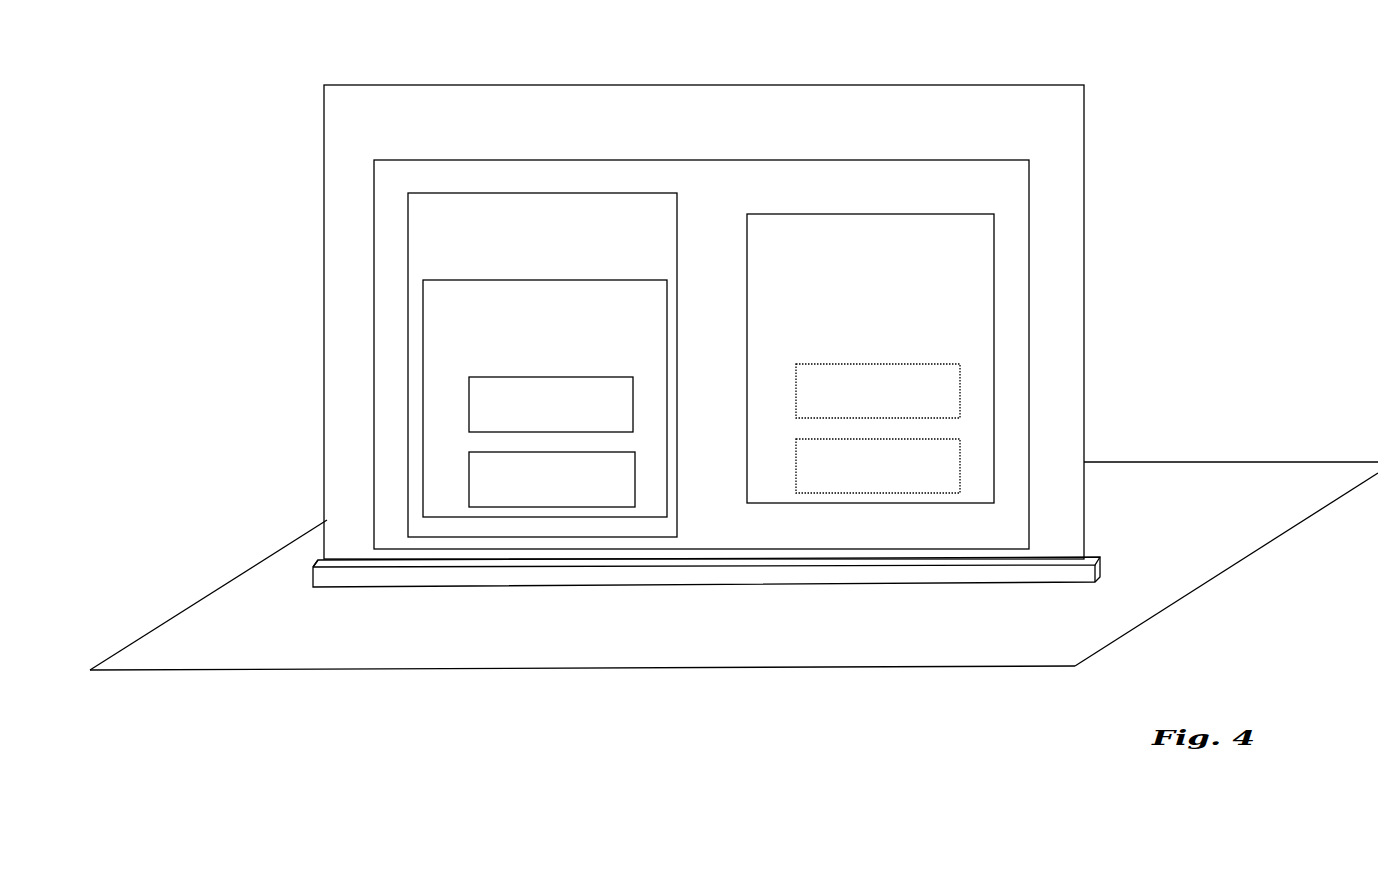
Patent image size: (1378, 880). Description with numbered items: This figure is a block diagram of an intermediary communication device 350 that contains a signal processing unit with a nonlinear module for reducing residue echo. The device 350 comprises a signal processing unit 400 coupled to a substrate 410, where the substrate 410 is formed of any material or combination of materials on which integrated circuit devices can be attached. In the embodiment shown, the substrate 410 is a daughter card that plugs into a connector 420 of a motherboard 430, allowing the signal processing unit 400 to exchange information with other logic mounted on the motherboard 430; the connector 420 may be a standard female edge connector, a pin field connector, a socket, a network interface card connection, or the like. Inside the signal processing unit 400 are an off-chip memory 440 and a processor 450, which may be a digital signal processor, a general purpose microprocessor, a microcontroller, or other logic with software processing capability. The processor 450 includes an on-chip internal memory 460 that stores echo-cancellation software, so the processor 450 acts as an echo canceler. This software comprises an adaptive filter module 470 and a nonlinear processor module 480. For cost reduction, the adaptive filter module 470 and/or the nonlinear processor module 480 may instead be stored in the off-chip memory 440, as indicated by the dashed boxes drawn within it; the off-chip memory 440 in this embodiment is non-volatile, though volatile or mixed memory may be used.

The intermediary communication device 350 is at (212, 280).
The signal processing unit 400 is at (823, 185).
The substrate 410 is at (995, 145).
The connector 420 is at (972, 578).
The motherboard 430 is at (215, 615).
The off-chip memory 440 is at (887, 324).
The processor 450 is at (565, 268).
The on-chip internal memory 460 is at (570, 368).
The adaptive filter module 470 is at (468, 385).
The nonlinear processor (NLP) module 480 is at (468, 473).